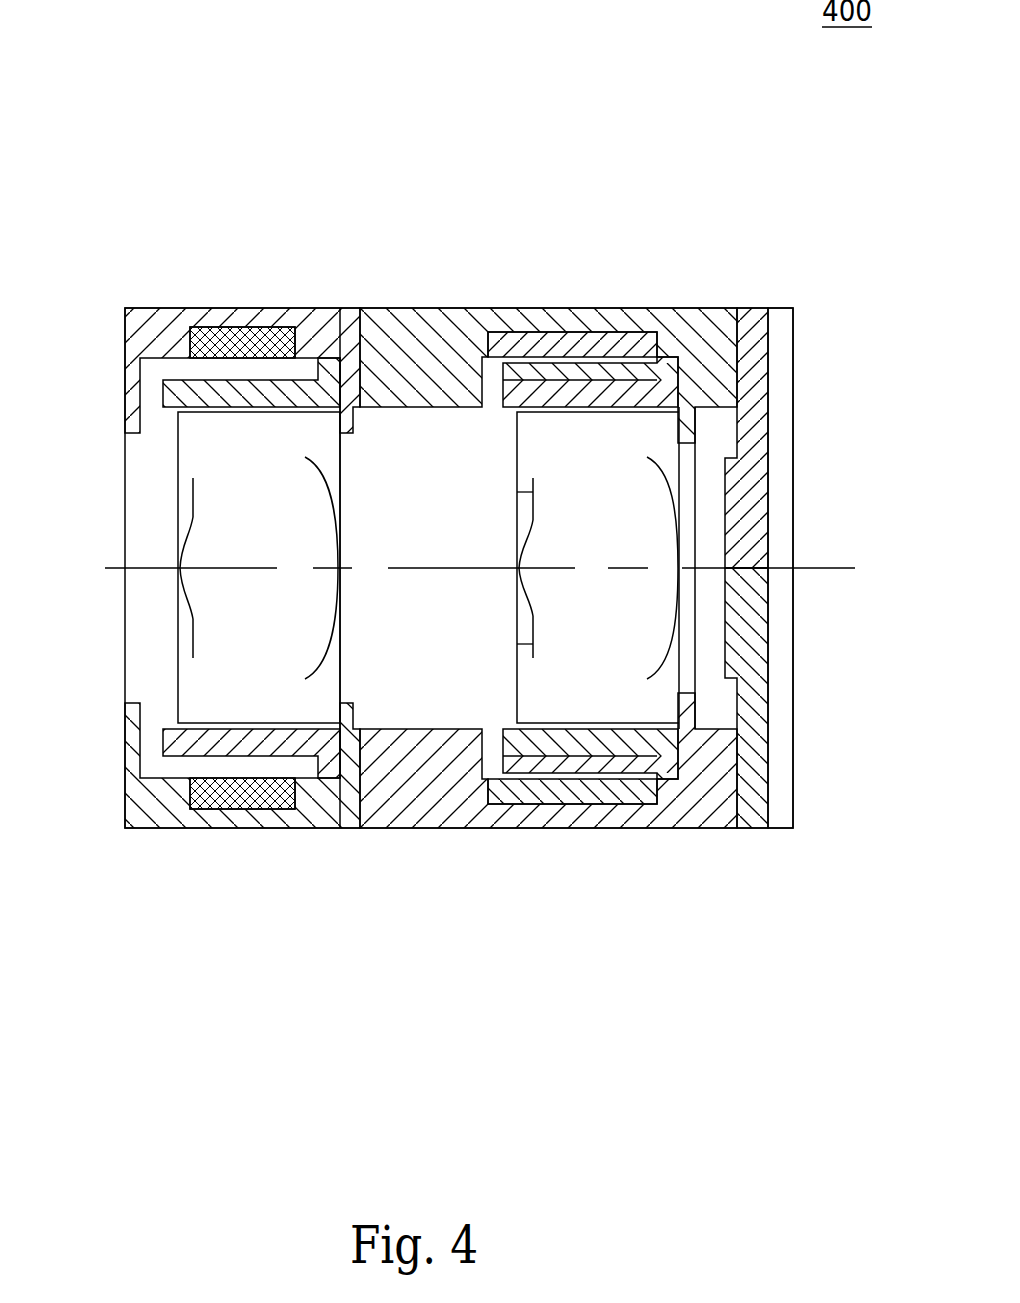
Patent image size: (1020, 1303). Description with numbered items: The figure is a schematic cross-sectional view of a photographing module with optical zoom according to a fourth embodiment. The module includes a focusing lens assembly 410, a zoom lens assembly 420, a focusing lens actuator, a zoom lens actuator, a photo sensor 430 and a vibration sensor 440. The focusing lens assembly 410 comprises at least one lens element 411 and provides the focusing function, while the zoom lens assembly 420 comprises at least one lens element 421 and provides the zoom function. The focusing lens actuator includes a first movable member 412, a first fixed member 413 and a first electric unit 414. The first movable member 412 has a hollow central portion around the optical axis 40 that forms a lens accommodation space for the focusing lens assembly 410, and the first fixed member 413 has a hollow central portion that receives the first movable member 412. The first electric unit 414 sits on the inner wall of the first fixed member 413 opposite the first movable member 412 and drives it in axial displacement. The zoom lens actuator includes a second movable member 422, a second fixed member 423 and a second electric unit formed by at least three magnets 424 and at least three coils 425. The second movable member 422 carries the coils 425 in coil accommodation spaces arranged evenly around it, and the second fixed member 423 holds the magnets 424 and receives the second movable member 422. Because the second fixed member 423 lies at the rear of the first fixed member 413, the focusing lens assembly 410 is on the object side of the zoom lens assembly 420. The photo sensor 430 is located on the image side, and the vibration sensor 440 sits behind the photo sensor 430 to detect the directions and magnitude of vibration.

The optical axis 40 is at (498, 569).
The focusing lens assembly 410 is at (213, 463).
The lens element 411 is at (180, 553).
The first movable member 412 is at (227, 390).
The first fixed member 413 is at (148, 322).
The first electric unit 414 is at (208, 327).
The zoom lens assembly 420 is at (553, 463).
The lens element 421 is at (522, 553).
The second movable member 422 is at (570, 345).
The second fixed member 423 is at (488, 322).
The magnet 424 is at (558, 792).
The coil 425 is at (625, 763).
The photo sensor 430 is at (730, 500).
The vibration sensor 440 is at (782, 355).